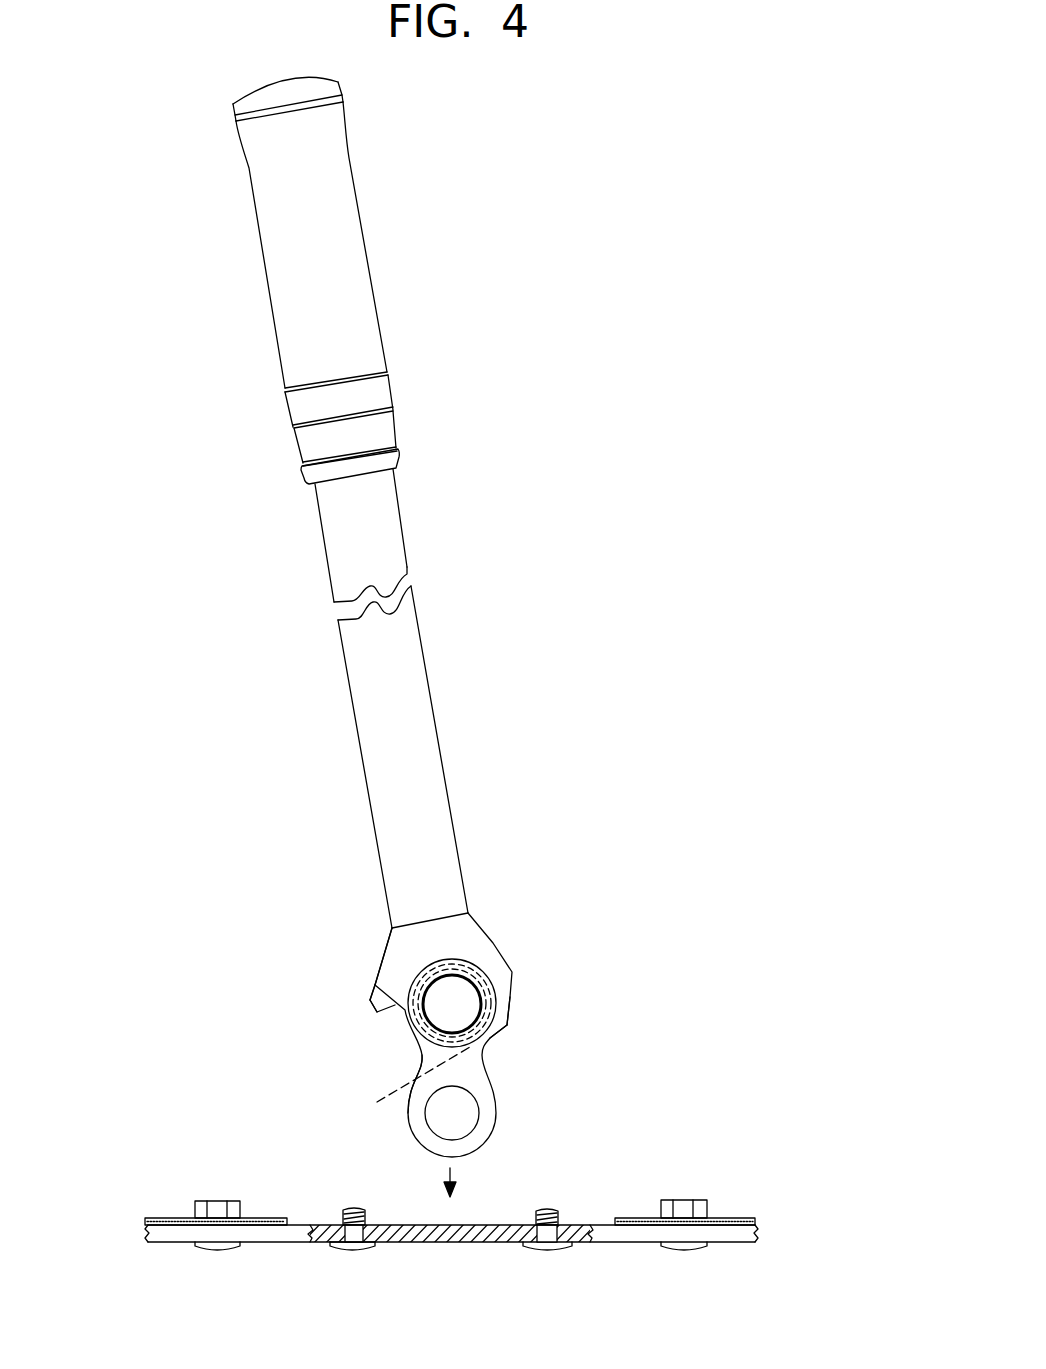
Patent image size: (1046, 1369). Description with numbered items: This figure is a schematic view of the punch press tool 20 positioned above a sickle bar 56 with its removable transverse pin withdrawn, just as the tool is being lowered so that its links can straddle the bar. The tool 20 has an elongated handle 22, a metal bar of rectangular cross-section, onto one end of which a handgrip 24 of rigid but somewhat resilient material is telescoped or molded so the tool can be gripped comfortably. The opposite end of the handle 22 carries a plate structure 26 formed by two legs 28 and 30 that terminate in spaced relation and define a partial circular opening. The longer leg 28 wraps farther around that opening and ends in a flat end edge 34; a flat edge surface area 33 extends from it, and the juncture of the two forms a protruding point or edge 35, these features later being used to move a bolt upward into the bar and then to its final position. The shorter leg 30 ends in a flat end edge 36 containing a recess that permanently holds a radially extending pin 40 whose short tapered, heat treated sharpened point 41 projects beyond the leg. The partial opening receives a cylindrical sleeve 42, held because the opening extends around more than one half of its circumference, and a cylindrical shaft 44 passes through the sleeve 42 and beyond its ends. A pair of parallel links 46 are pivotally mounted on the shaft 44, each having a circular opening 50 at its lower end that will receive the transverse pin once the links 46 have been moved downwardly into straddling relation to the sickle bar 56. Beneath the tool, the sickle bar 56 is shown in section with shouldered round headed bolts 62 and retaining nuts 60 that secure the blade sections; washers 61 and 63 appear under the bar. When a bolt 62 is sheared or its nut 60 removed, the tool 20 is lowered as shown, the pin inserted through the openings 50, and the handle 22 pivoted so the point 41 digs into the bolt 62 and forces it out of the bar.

The punch press tool 20 is at (414, 625).
The elongated handle 22 is at (383, 528).
The handgrip 24 is at (346, 270).
The plate structure 26 is at (443, 930).
The leg 28 is at (492, 960).
The leg 30 is at (397, 950).
The flat edge surface area 33 is at (508, 1030).
The flat end edge 34 is at (401, 1090).
The protruding point or edge 35 is at (483, 1047).
The flat end edge 36 is at (407, 1013).
The radially extending pin 40 is at (380, 993).
The tapered and sharpened point 41 is at (395, 1007).
The cylindrical sleeve 42 is at (487, 997).
The cylindrical shaft 44 is at (460, 993).
The parallel links 46 is at (427, 1052).
The circular opening 50 is at (427, 1120).
The sickle bar 56 is at (462, 1235).
The retaining nut 60 is at (677, 1208).
The washer 61 is at (367, 1230).
The shouldered round headed bolt 62 is at (545, 1212).
The screw washer 63 is at (547, 1247).